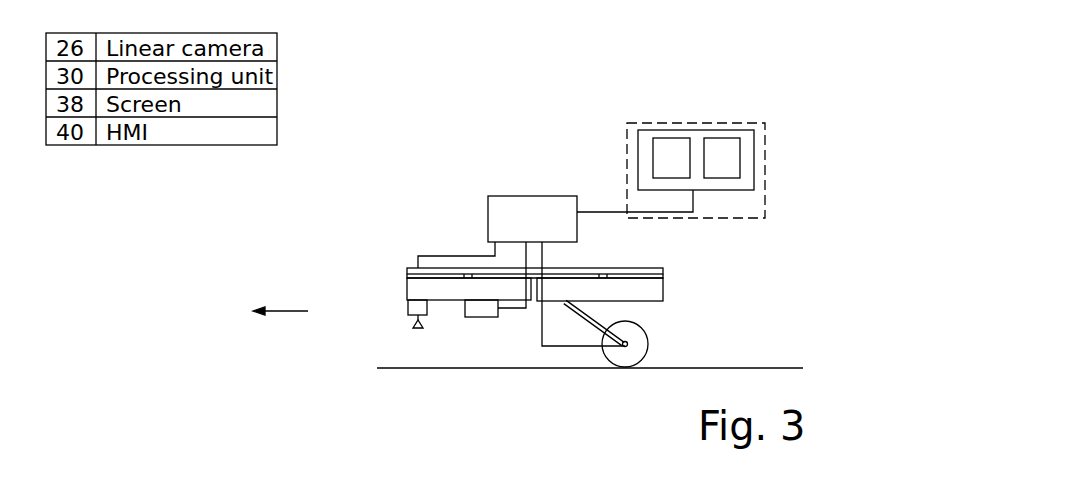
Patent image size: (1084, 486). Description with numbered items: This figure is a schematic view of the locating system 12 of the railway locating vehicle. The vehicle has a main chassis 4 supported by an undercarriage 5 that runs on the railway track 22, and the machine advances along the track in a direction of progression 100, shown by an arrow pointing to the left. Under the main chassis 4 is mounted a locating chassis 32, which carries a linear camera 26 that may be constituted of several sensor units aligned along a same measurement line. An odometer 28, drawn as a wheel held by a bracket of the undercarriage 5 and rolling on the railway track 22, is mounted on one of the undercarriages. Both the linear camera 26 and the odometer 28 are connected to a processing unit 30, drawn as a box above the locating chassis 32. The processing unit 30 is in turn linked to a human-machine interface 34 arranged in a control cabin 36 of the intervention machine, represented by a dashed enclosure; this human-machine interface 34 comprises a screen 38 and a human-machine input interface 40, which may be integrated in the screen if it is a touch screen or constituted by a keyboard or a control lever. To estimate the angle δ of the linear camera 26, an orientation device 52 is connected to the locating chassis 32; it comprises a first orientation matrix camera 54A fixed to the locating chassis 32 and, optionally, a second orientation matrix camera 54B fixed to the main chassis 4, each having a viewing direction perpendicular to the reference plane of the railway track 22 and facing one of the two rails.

The main chassis 4 is at (647, 268).
The undercarriage 5 is at (554, 290).
The locating system 12 is at (420, 163).
The railway track 22 is at (780, 368).
The linear camera 26 is at (478, 305).
The odometer 28 is at (632, 327).
The processing unit 30 is at (545, 205).
The locating chassis 32 is at (448, 290).
The human-machine interface 34 is at (755, 170).
The control cabin 36 is at (766, 148).
The screen 38 is at (673, 140).
The human-machine input interface 40 is at (726, 145).
The orientation device 52 is at (386, 285).
The first orientation matrix camera 54A is at (408, 307).
The second orientation matrix camera 54B is at (418, 321).
The direction of progression 100 is at (298, 312).